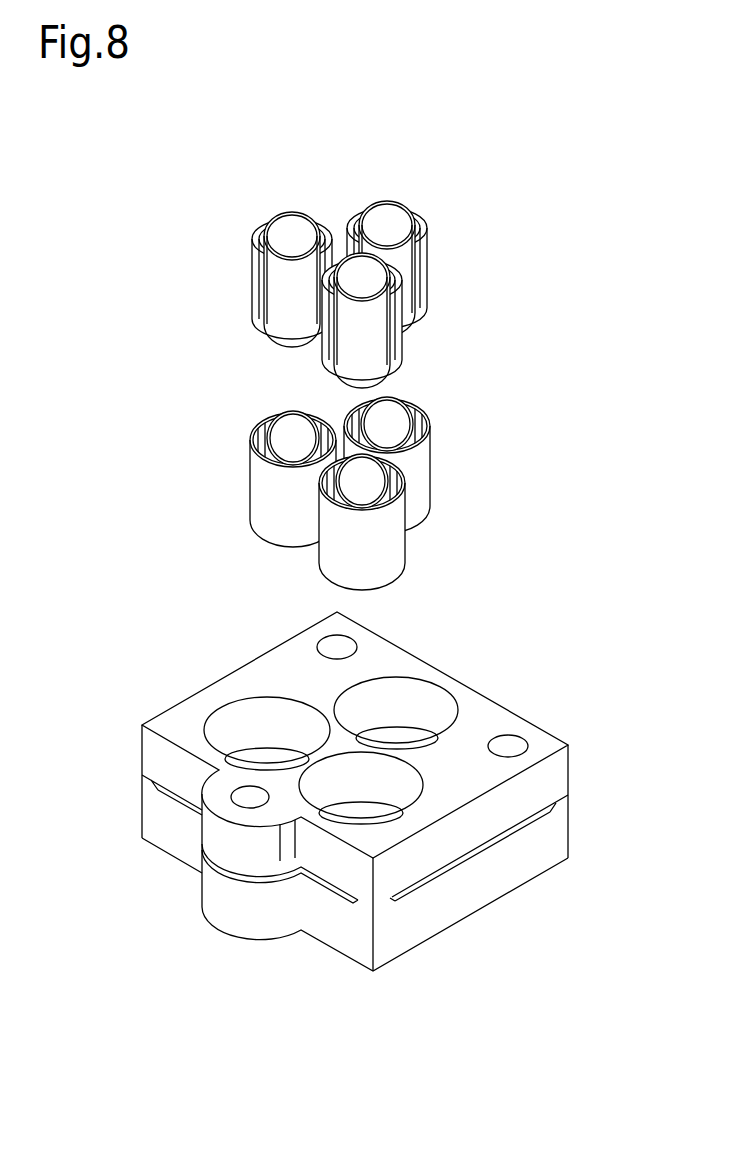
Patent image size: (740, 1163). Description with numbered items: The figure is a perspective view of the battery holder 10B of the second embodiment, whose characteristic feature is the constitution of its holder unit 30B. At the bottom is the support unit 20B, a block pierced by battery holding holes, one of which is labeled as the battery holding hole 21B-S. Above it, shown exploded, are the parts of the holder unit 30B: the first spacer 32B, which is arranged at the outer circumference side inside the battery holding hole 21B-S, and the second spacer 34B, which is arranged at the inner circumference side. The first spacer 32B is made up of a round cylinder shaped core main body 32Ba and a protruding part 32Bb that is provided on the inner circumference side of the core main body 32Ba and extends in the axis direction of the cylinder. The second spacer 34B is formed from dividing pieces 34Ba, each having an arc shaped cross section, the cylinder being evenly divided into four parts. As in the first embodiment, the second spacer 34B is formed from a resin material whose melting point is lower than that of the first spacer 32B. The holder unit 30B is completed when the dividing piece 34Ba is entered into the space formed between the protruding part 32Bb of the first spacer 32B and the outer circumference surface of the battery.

The battery holder 10B is at (199, 204).
The support unit 20B is at (507, 707).
The battery holding hole 21B-S is at (437, 707).
The holder unit 30B is at (540, 247).
The first spacer 32B is at (430, 483).
The core main body 32Ba is at (255, 468).
The protruding part 32Bb is at (253, 423).
The second spacer 34B is at (430, 260).
The dividing piece 34Ba is at (253, 265).